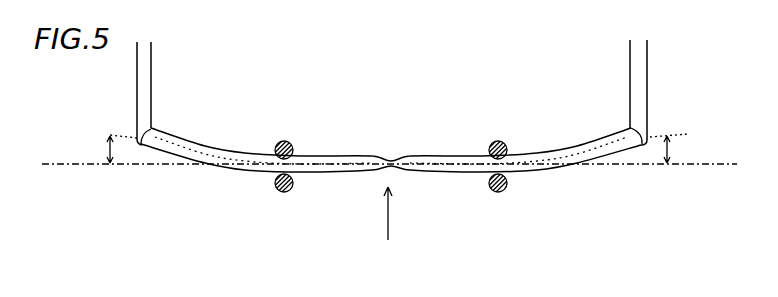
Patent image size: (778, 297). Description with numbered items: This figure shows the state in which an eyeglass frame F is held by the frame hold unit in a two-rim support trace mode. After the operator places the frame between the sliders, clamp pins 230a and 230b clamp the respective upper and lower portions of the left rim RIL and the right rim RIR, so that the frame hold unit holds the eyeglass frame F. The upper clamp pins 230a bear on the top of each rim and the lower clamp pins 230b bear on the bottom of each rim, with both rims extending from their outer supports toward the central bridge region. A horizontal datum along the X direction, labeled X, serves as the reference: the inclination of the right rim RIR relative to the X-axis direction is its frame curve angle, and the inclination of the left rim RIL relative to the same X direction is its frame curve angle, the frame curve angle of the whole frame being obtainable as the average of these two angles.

The clamp pin 230a is at (283, 140).
The clamp pin 230b is at (284, 192).
The left rim RIL is at (225, 168).
The right rim RIR is at (541, 168).
The eyeglass frame F is at (388, 230).
The X direction X is at (391, 179).